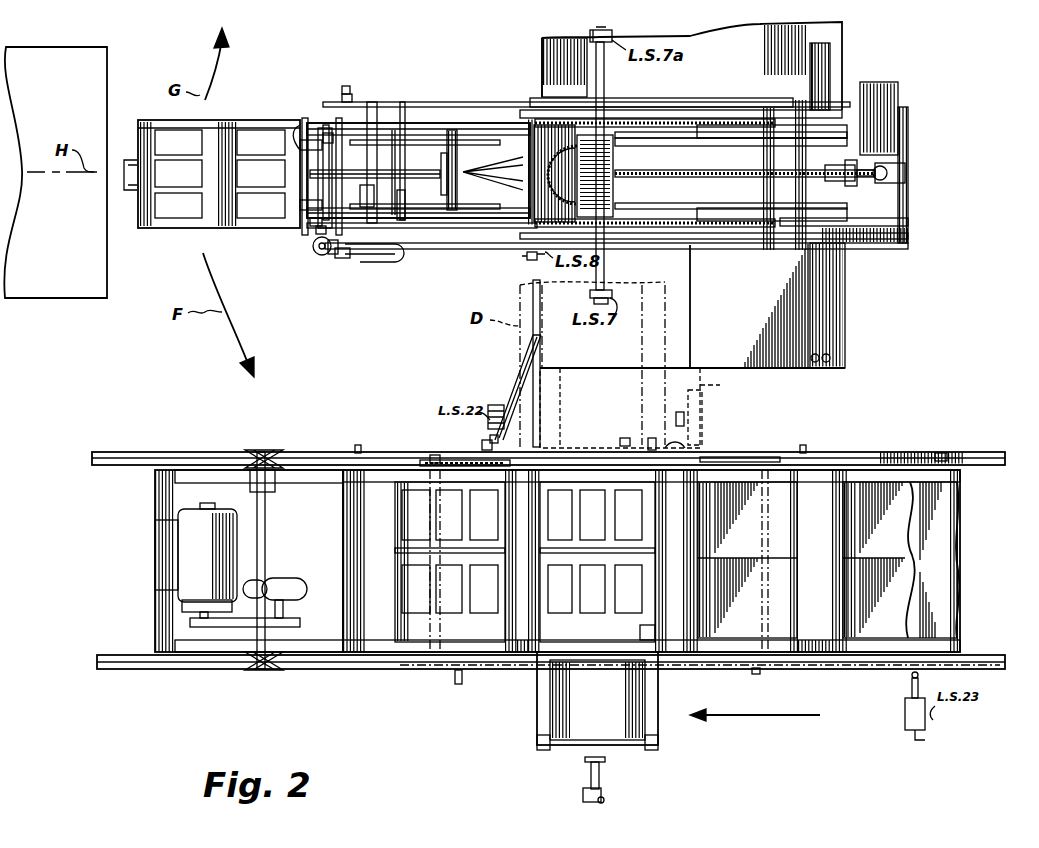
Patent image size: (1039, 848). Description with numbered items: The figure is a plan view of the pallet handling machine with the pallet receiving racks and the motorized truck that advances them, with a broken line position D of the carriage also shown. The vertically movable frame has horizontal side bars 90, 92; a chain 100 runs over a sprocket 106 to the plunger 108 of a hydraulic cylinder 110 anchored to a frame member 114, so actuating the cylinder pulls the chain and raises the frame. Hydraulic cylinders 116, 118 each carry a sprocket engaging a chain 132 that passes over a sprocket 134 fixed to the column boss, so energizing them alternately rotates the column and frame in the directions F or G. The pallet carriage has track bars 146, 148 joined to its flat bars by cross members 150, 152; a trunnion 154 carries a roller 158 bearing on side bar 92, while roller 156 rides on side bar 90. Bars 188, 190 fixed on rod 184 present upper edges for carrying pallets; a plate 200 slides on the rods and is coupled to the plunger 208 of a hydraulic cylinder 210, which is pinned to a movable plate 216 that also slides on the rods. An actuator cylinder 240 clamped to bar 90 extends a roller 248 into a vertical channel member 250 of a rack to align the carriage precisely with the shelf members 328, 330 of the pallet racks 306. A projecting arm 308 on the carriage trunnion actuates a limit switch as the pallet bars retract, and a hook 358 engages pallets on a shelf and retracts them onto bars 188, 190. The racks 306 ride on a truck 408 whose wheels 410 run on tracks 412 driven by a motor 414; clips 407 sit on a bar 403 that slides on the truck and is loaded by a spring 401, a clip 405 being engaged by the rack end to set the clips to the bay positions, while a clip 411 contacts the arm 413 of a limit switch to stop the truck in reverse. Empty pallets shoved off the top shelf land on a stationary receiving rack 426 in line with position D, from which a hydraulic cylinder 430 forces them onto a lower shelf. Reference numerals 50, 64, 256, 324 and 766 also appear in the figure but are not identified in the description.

The carriage housing 50 is at (666, 33).
The frame column 64 is at (838, 58).
The horizontal side bar 90 is at (662, 245).
The horizontal side bar 92 is at (741, 103).
The chain 100 is at (735, 172).
The sprocket 106 is at (828, 172).
The plunger 108 is at (895, 168).
The hydraulic cylinder 110 is at (895, 178).
The frame member 114 is at (895, 212).
The hydraulic cylinder 116 is at (715, 137).
The hydraulic cylinder 118 is at (745, 215).
The chain 132 is at (645, 213).
The sprocket 134 is at (615, 180).
The track bar 146 is at (332, 112).
The track bar 148 is at (314, 245).
The cross member 150 is at (312, 222).
The cross member 152 is at (318, 232).
The trunnion 154 is at (327, 139).
The roller 156 is at (328, 258).
The roller 158 is at (340, 95).
The rod 184 is at (370, 170).
The bar 188 is at (372, 115).
The bar 190 is at (365, 190).
The plate 200 is at (470, 242).
The plunger 208 is at (400, 208).
The hydraulic cylinder 210 is at (402, 118).
The movable plate 216 is at (460, 125).
The actuator cylinder 240 is at (392, 258).
The roller 248 is at (305, 252).
The vertical channel member 250 is at (714, 457).
The arm 256 is at (305, 125).
The pallet rack 306 is at (876, 456).
The projecting arm 308 is at (335, 258).
The nozzle 324 is at (499, 170).
The pallet supporting shelf member 328 is at (545, 640).
The pallet supporting shelf member 330 is at (648, 640).
The hook 358 is at (126, 190).
The spring 401 is at (476, 458).
The bar 403 is at (947, 456).
The clip 405 is at (333, 488).
The clip 407 is at (650, 438).
The truck 408 is at (304, 480).
The wheel 410 is at (258, 450).
The clip 411 is at (460, 683).
The track 412 is at (142, 453).
The arm 413 is at (905, 686).
The motor 414 is at (185, 555).
The receiving rack 426 is at (537, 716).
The hydraulic cylinder 430 is at (606, 793).
The roller 766 is at (830, 358).